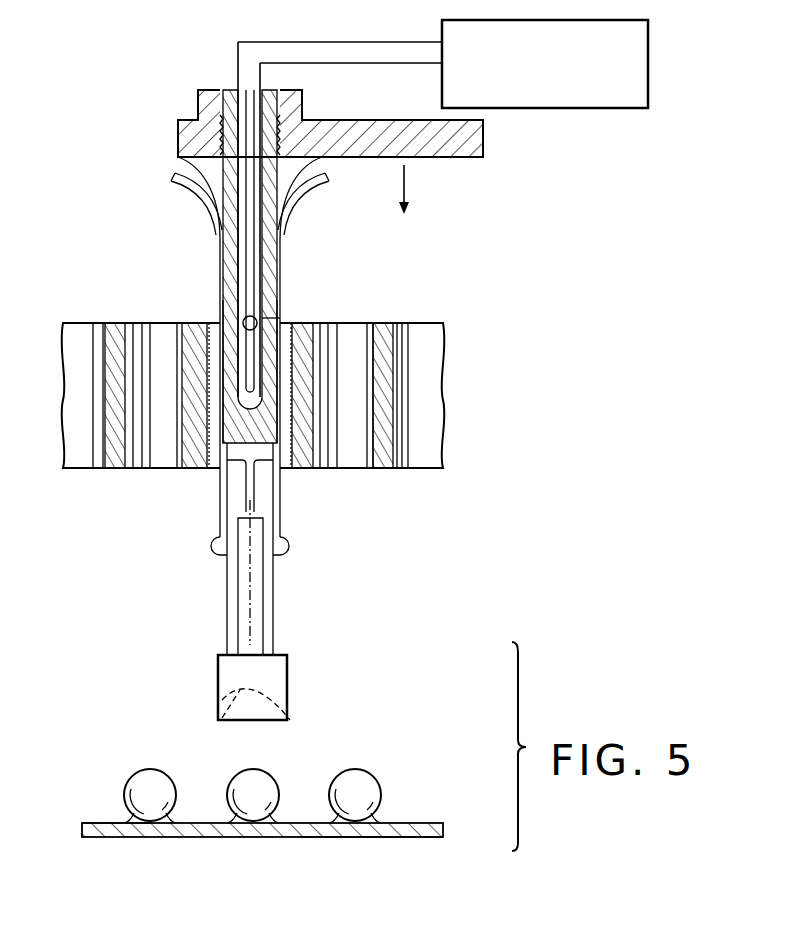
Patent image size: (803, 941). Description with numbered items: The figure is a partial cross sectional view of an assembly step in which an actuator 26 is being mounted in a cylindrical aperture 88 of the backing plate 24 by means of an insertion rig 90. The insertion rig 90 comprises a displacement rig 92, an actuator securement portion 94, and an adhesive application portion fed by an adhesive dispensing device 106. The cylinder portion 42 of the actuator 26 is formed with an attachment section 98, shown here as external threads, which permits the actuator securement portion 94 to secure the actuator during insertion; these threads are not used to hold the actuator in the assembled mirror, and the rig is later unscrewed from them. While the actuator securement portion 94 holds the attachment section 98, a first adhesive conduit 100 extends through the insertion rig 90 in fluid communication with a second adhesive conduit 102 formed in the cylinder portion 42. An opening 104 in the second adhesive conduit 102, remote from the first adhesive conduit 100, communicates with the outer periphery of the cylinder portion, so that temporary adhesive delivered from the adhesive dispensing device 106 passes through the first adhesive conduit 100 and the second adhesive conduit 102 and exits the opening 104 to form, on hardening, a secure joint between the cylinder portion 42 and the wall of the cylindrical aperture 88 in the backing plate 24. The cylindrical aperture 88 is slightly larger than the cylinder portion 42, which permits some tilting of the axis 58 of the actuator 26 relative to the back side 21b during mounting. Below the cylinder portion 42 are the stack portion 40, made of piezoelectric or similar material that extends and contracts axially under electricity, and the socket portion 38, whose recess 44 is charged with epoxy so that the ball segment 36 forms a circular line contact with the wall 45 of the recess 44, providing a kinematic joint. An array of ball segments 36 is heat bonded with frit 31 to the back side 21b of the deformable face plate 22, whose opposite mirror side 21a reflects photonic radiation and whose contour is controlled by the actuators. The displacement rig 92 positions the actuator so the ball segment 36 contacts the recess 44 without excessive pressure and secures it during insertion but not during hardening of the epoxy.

The adhesive dispensing device 106 is at (656, 76).
The actuator securement portion 94 is at (206, 88).
The displacement rig 92 is at (486, 142).
The attachment section 98 is at (217, 133).
The cylinder portion 42 is at (233, 236).
The first adhesive conduit 100 is at (258, 248).
The second adhesive conduit 102 is at (230, 290).
The opening 104 is at (283, 318).
The backing plate 24 is at (448, 357).
The cylindrical aperture 88 is at (160, 460).
The actuator 26 is at (283, 515).
The axis 58 is at (250, 577).
The stack portion 40 is at (260, 622).
The socket portion 38 is at (290, 670).
The wall 45 is at (218, 690).
The recess 44 is at (263, 724).
The ball segment 36 is at (230, 785).
The frit 31 is at (380, 820).
The deformable face plate 22 is at (436, 823).
The back side 21b is at (97, 822).
The mirror side 21a is at (355, 838).
The insertion rig 90 is at (460, 185).